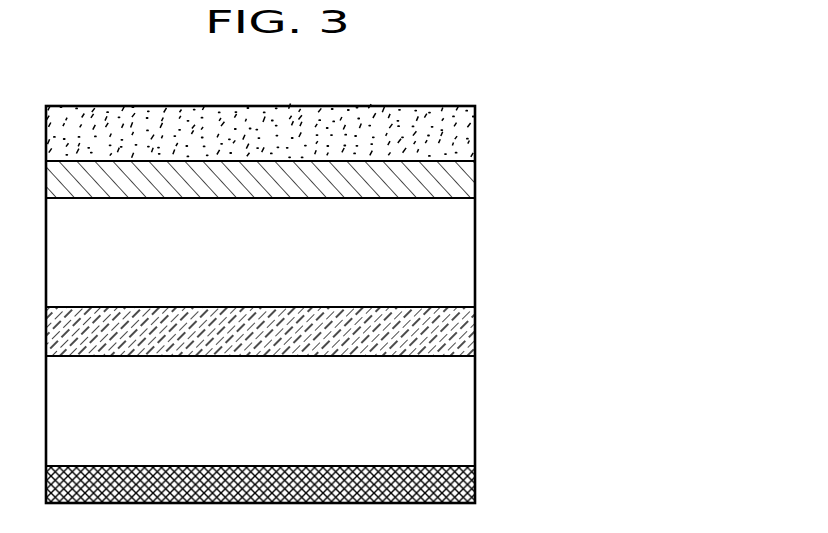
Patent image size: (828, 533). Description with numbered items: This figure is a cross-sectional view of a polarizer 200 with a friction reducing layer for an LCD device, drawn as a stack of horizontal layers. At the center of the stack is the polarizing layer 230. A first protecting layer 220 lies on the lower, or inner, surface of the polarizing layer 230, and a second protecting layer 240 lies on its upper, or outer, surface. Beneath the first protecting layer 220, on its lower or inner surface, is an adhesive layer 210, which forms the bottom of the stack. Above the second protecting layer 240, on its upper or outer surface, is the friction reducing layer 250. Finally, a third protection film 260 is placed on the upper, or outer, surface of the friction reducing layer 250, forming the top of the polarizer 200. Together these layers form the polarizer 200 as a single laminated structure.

The polarizer 200 is at (638, 243).
The adhesive layer 210 is at (475, 482).
The first protecting layer 220 is at (453, 412).
The polarizing layer 230 is at (455, 329).
The second protecting layer 240 is at (453, 255).
The friction reducing layer 250 is at (455, 179).
The third protection film 260 is at (455, 137).